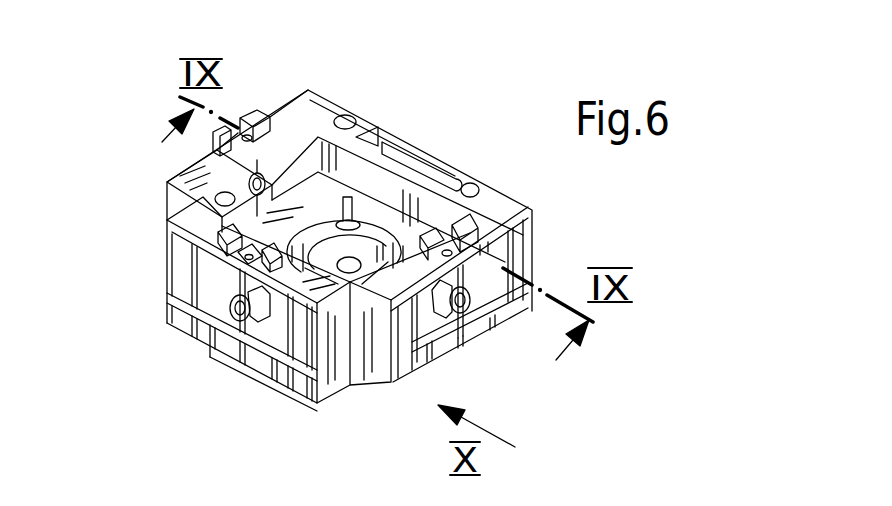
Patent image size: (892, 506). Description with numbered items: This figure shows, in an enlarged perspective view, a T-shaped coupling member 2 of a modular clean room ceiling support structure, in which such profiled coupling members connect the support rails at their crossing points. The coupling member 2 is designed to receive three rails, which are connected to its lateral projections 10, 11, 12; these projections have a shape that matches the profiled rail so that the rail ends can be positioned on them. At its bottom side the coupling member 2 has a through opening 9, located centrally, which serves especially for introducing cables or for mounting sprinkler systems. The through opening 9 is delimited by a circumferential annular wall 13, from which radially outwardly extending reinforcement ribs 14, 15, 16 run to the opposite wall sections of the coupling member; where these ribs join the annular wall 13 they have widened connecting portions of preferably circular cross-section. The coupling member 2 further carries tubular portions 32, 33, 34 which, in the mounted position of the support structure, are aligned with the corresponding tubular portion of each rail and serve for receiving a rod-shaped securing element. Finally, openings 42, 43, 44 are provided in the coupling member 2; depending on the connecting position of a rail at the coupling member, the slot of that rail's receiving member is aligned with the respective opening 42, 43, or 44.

The coupling member 2 is at (455, 163).
The through opening 9 is at (403, 232).
The lateral projection 10 is at (252, 380).
The lateral projection 11 is at (196, 168).
The lateral projection 12 is at (531, 312).
The annular wall 13 is at (356, 240).
The reinforcement rib 14 is at (315, 312).
The reinforcement rib 15 is at (348, 198).
The reinforcement rib 16 is at (268, 258).
The tubular portion 32 is at (234, 309).
The tubular portion 33 is at (259, 178).
The tubular portion 34 is at (465, 308).
The opening 42 is at (448, 252).
The opening 43 is at (244, 256).
The opening 44 is at (247, 134).